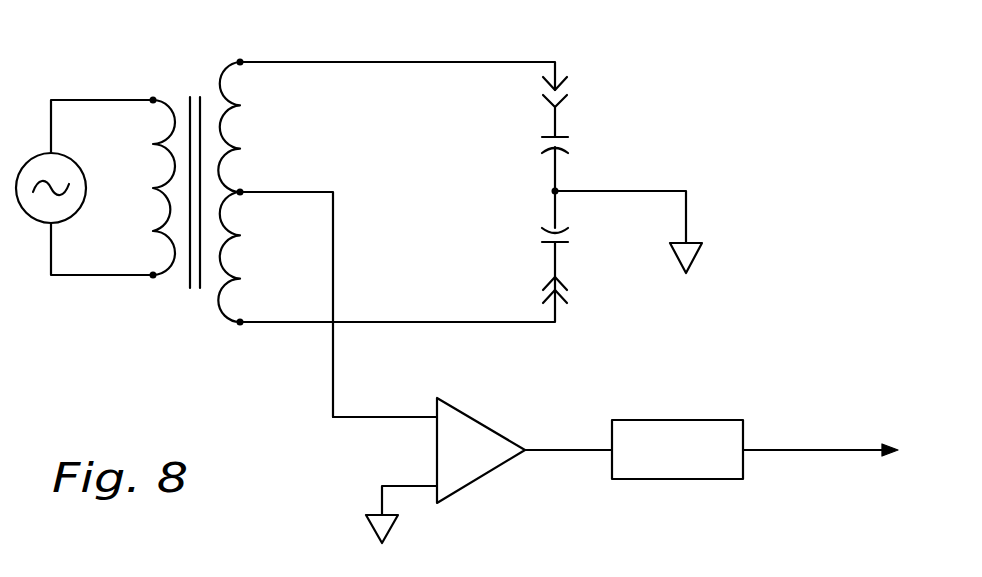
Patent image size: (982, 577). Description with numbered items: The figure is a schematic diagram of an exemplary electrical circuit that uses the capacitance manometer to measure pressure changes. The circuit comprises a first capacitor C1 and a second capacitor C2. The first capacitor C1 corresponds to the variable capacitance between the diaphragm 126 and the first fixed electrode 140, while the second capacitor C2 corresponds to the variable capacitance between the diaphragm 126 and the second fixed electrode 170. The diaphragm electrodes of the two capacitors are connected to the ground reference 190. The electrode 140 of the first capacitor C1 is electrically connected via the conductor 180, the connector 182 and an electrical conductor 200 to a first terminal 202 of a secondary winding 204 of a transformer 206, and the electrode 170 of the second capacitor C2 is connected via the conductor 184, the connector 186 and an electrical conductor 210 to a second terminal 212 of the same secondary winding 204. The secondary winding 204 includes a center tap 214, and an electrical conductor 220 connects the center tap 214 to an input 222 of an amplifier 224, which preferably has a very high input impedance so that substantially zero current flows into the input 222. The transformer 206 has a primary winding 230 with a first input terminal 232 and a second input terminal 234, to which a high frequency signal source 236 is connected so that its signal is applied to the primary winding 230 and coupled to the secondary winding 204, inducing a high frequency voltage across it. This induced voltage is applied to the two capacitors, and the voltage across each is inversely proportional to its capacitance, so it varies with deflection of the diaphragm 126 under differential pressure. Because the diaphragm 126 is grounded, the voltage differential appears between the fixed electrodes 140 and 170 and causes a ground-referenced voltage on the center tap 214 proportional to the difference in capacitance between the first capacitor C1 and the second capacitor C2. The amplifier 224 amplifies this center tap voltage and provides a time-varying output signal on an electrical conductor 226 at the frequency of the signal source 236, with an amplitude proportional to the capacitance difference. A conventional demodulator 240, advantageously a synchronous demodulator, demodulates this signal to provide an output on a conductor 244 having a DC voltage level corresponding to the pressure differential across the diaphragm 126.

The electrical conductor 200 is at (437, 60).
The first terminal 202 is at (240, 60).
The secondary winding 204 is at (218, 128).
The transformer 206 is at (235, 340).
The electrical conductor 210 is at (527, 323).
The second terminal 212 is at (242, 324).
The center tap 214 is at (242, 186).
The electrical conductor 220 is at (334, 251).
The input 222 is at (437, 417).
The amplifier 224 is at (482, 478).
The electrical conductor 226 is at (555, 450).
The primary winding 230 is at (174, 123).
The first input terminal 232 is at (152, 100).
The second input terminal 234 is at (152, 277).
The high frequency signal source 236 is at (70, 222).
The demodulator 240 is at (670, 420).
The conductor 244 is at (795, 452).
The connector 182 is at (567, 86).
The conductor 180 is at (553, 113).
The first fixed electrode 140 is at (565, 135).
The first capacitor C1 is at (574, 146).
The diaphragm 126 is at (550, 231).
The conductor 184 is at (553, 258).
The second capacitor C2 is at (574, 240).
The second fixed electrode 170 is at (563, 246).
The connector 186 is at (548, 296).
The ground reference 190 is at (700, 240).